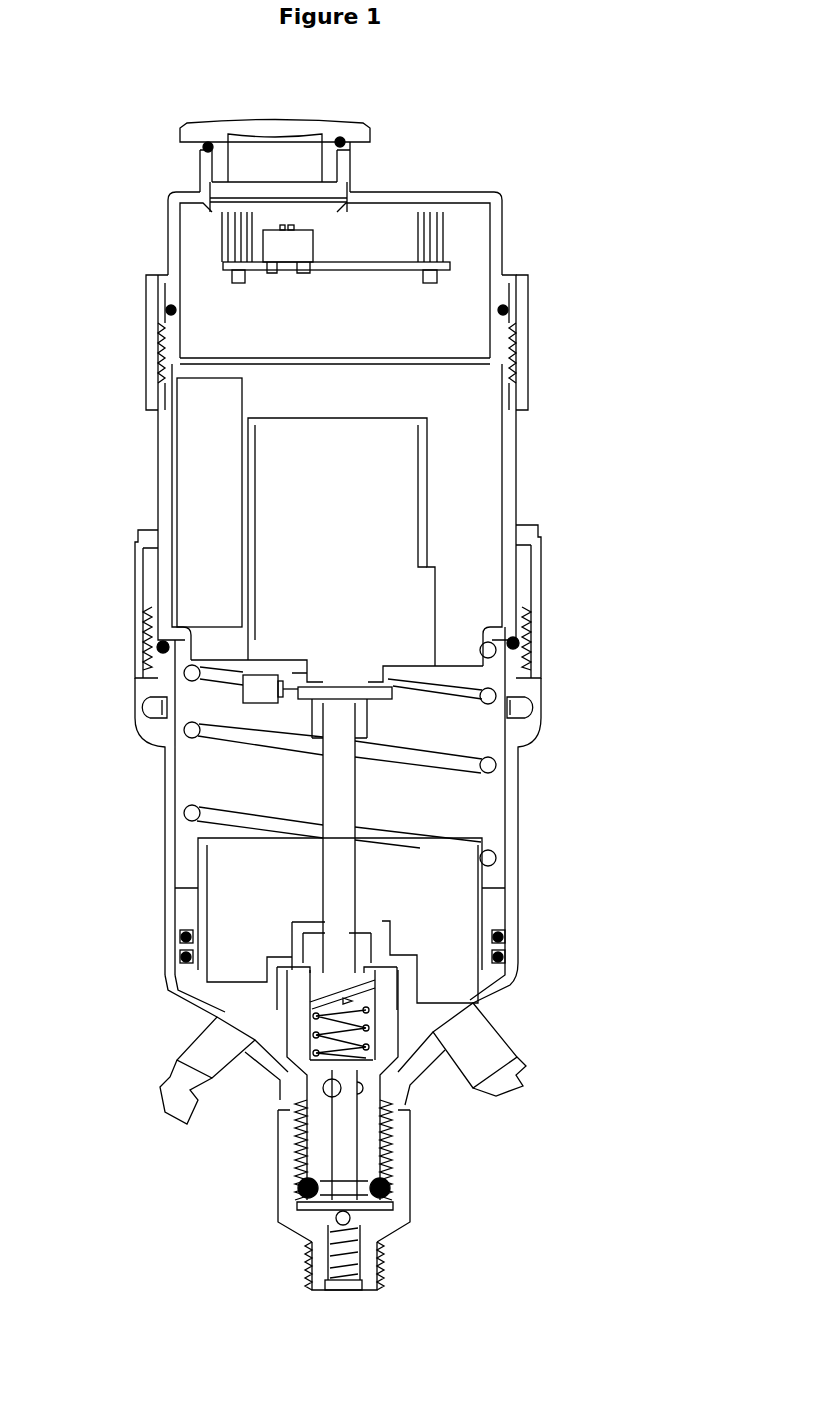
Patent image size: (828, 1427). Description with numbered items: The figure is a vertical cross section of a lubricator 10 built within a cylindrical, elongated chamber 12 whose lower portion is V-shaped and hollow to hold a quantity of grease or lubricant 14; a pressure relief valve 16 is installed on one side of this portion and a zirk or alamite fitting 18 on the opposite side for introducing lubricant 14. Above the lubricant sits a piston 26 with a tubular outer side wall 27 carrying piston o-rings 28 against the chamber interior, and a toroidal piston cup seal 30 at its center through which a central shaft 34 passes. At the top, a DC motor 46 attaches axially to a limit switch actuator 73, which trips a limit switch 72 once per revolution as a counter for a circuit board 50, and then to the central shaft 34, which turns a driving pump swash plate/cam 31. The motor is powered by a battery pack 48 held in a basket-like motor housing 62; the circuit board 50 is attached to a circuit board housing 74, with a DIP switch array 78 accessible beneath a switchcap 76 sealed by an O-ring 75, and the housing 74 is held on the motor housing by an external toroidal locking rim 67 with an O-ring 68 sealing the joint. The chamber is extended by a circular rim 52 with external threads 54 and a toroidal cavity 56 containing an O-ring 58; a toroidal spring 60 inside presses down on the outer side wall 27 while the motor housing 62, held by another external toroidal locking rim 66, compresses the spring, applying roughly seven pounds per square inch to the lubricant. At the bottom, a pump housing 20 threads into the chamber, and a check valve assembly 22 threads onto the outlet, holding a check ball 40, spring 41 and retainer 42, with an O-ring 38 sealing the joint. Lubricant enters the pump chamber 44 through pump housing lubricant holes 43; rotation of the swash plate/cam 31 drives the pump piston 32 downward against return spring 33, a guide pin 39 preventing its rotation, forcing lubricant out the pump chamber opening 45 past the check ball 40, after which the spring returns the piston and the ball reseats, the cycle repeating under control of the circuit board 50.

The lubricator 10 is at (519, 818).
The chamber 12 is at (408, 1062).
The lubricant 14 is at (418, 1052).
The pressure relief valve 16 is at (500, 1083).
The zirk or alamite fitting 18 is at (168, 1058).
The pump housing 20 is at (322, 1163).
The check valve assembly 22 is at (320, 1248).
The piston 26 is at (487, 978).
The outer side wall 27 is at (500, 895).
The piston o-rings 28 is at (502, 945).
The piston cup seal 30 is at (313, 948).
The driving pump swash plate/cam 31 is at (310, 985).
The pump piston 32 is at (335, 1070).
The return spring 33 is at (312, 1040).
The central shaft 34 is at (338, 858).
The O-ring 38 is at (395, 1192).
The guide pin 39 is at (352, 1000).
The check ball 40 is at (332, 1220).
The check ball spring 41 is at (348, 1240).
The retainer 42 is at (357, 1285).
The pump housing lubricant holes 43 is at (365, 1087).
The pump chamber 44 is at (343, 1132).
The pump chamber opening 45 is at (345, 1175).
The DC motor 46 is at (341, 542).
The battery pack 48 is at (209, 502).
The circuit board 50 is at (358, 262).
The circular rim 52 is at (520, 665).
The external threads 54 is at (146, 632).
The toroidal cavity 56 is at (512, 640).
The O-ring 58 is at (160, 648).
The toroidal spring 60 is at (496, 765).
The motor housing 62 is at (518, 455).
The external toroidal locking rim 66 is at (536, 652).
The external toroidal locking rim 67 is at (524, 358).
The O-ring 68 is at (506, 310).
The limit switch 72 is at (245, 695).
The limit switch actuator 73 is at (315, 718).
The circuit board housing 74 is at (176, 243).
The O-ring 75 is at (205, 146).
The switchcap 76 is at (188, 128).
The DIP switch array 78 is at (300, 242).